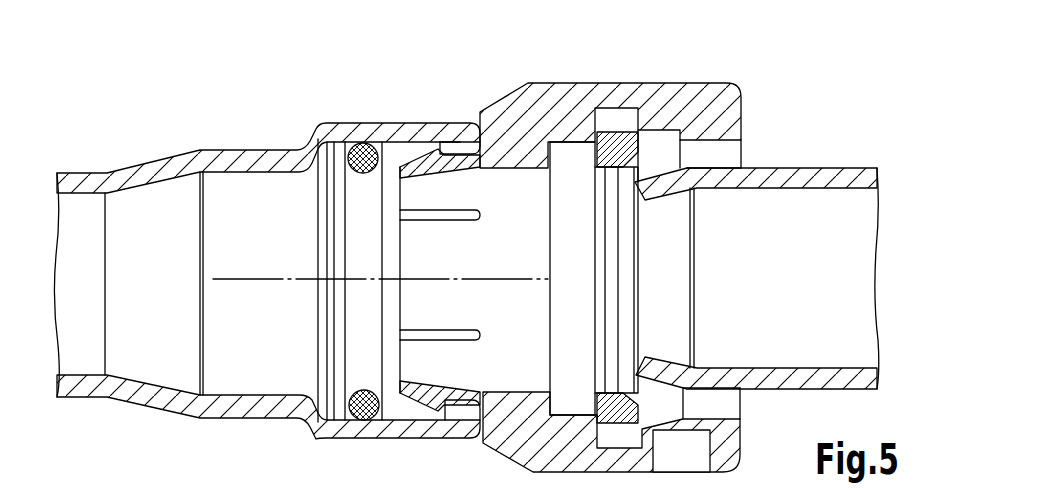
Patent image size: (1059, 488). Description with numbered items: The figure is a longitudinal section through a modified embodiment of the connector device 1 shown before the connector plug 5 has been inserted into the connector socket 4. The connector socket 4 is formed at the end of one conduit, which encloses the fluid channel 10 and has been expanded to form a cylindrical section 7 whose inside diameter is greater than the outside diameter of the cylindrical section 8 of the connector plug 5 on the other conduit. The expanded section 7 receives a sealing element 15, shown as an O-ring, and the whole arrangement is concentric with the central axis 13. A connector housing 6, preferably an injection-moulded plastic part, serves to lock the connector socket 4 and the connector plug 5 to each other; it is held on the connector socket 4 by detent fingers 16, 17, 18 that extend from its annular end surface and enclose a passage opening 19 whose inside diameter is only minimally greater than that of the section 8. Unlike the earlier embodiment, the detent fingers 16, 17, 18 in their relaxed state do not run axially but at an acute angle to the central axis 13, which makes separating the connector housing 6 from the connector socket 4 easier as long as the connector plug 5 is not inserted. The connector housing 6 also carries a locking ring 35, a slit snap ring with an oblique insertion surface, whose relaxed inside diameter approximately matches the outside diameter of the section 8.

The connector device 1 is at (765, 78).
The connector socket 4 is at (208, 145).
The connector plug 5 is at (866, 112).
The connector housing 6 is at (507, 116).
The cylindrical section 7 is at (343, 487).
The cylindrical section 8 is at (796, 169).
The fluid channel 10 is at (92, 316).
The central axis 13 is at (519, 278).
The sealing element 15 is at (353, 143).
The detent finger 16 is at (449, 204).
The detent finger 17 is at (443, 287).
The detent finger 18 is at (440, 375).
The passage opening 19 is at (539, 322).
The locking ring 35 is at (640, 414).